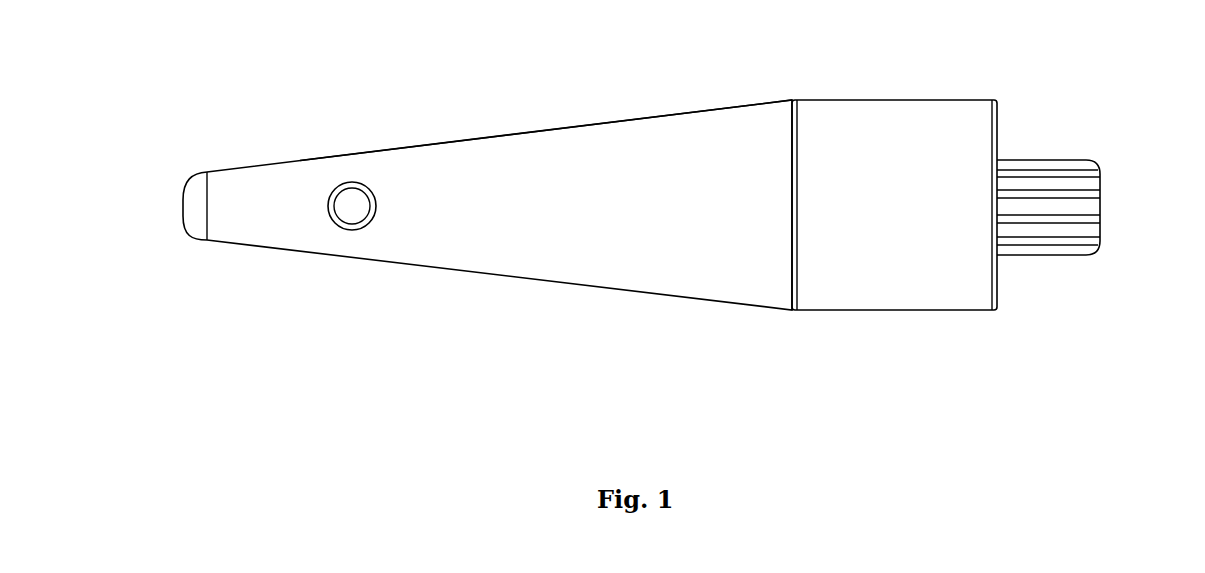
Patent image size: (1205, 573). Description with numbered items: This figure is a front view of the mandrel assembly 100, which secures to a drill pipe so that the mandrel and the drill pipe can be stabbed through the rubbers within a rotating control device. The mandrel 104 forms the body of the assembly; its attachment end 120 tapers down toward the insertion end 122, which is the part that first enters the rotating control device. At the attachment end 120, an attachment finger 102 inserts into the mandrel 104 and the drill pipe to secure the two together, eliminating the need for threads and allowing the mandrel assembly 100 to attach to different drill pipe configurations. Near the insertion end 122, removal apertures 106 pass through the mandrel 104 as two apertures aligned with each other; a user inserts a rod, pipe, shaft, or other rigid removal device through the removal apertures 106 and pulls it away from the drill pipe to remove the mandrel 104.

The mandrel assembly 100 is at (730, 304).
The attachment finger 102 is at (1080, 161).
The mandrel 104 is at (670, 115).
The removal apertures 106 is at (352, 204).
The attachment end 120 is at (993, 308).
The insertion end 122 is at (190, 238).